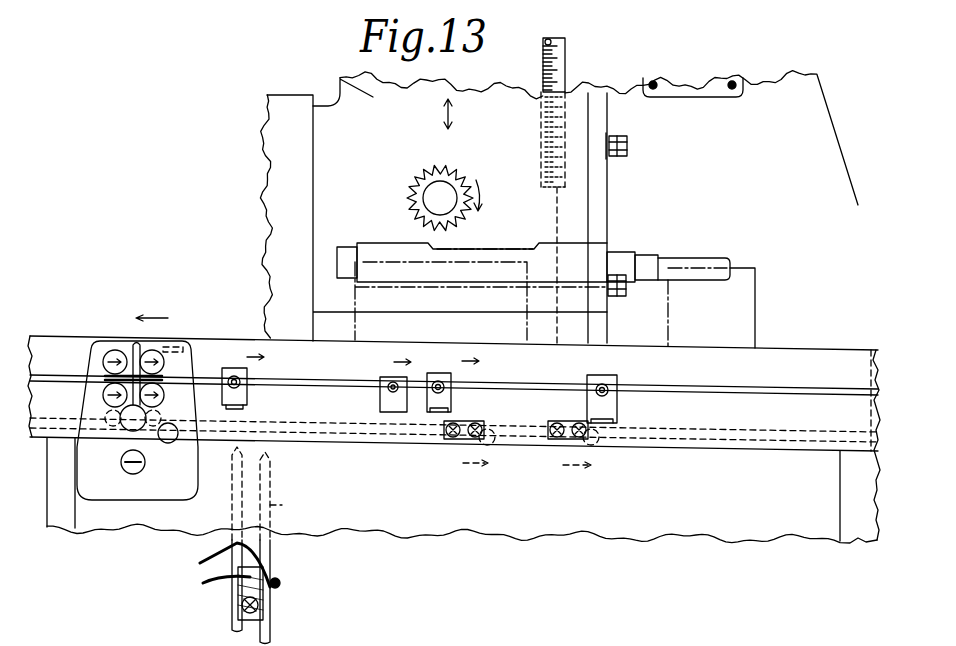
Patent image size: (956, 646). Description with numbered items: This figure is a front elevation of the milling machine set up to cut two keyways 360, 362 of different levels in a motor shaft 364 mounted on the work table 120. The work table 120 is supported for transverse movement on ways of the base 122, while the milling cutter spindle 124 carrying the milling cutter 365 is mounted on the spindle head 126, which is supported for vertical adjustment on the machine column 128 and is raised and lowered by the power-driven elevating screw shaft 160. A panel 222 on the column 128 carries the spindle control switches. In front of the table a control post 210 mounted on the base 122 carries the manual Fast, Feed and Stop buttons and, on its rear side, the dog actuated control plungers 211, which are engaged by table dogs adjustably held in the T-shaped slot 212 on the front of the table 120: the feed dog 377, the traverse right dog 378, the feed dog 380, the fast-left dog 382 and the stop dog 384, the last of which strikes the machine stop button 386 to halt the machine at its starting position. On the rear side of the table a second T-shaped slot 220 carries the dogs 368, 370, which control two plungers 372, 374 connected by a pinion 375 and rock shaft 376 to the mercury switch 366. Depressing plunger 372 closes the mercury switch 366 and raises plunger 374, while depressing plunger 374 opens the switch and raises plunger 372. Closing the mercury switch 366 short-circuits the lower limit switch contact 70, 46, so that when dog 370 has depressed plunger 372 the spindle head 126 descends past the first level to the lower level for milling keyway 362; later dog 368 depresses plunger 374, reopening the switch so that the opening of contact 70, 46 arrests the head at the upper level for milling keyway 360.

The spindle head 126 is at (340, 77).
The machine column 128 is at (808, 117).
The elevating screw shaft 160 is at (568, 47).
The panel 222 is at (686, 86).
The milling cutter spindle 124 is at (440, 193).
The milling cutter 365 is at (458, 173).
The keyway 360 is at (473, 250).
The motor shaft 364 is at (388, 250).
The keyway 362 is at (683, 258).
The work table 120 is at (778, 360).
The T-shaped slot 212 is at (668, 389).
The T-shaped slot 220 is at (667, 429).
The base 122 is at (633, 518).
The control post 210 is at (140, 490).
The fast-left dog 382 is at (104, 362).
The dog actuated control plungers 211 is at (163, 375).
The machine stop button 386 is at (140, 436).
The feed dog 380 is at (243, 405).
The traverse right dog 378 is at (390, 375).
The feed dog 377 is at (448, 411).
The stop dog 384 is at (600, 417).
The dog 368 is at (477, 450).
The dog 370 is at (593, 450).
The plunger 372 is at (230, 482).
The plunger 374 is at (270, 477).
The pinion 375 is at (243, 627).
The rock shaft 376 is at (263, 605).
The mercury switch 366 is at (277, 580).
The lower limit switch contact 46 is at (212, 552).
The lower limit switch contact 70 is at (203, 585).